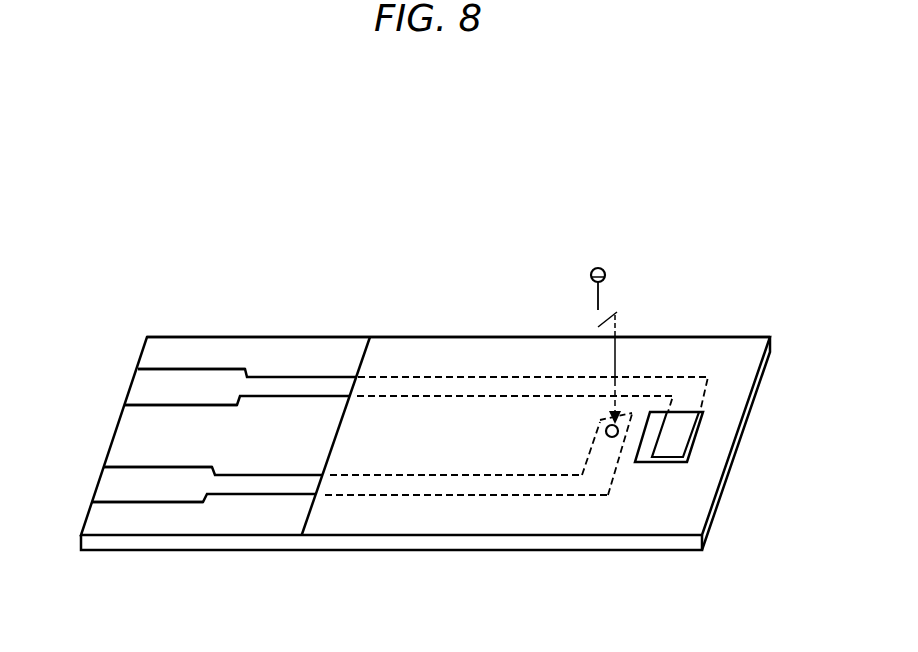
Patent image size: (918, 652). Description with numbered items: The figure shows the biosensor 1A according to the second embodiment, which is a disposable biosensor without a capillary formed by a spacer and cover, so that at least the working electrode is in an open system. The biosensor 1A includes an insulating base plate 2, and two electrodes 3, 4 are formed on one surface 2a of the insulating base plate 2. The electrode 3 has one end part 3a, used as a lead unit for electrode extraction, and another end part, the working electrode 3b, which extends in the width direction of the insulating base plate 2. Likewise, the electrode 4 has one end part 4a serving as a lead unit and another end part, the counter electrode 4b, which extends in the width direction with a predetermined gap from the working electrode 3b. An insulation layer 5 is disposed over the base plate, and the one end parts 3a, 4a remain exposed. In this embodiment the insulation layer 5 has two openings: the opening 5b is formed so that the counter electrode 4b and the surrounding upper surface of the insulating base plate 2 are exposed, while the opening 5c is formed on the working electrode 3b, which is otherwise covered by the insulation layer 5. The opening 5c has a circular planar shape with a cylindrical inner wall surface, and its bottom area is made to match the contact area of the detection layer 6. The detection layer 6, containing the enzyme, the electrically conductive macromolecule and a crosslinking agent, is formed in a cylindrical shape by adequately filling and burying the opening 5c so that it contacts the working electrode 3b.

The biosensor 1A is at (706, 240).
The insulating base plate 2 is at (137, 427).
The surface 2a is at (232, 353).
The electrode 3 is at (373, 507).
The one end part 3a is at (135, 492).
The working electrode 3b is at (617, 450).
The electrode 4 is at (317, 364).
The one end part 4a is at (168, 383).
The counter electrode 4b is at (693, 437).
The insulation layer 5 is at (410, 350).
The opening 5b is at (667, 462).
The opening 5c is at (605, 431).
The detection layer 6 is at (598, 268).